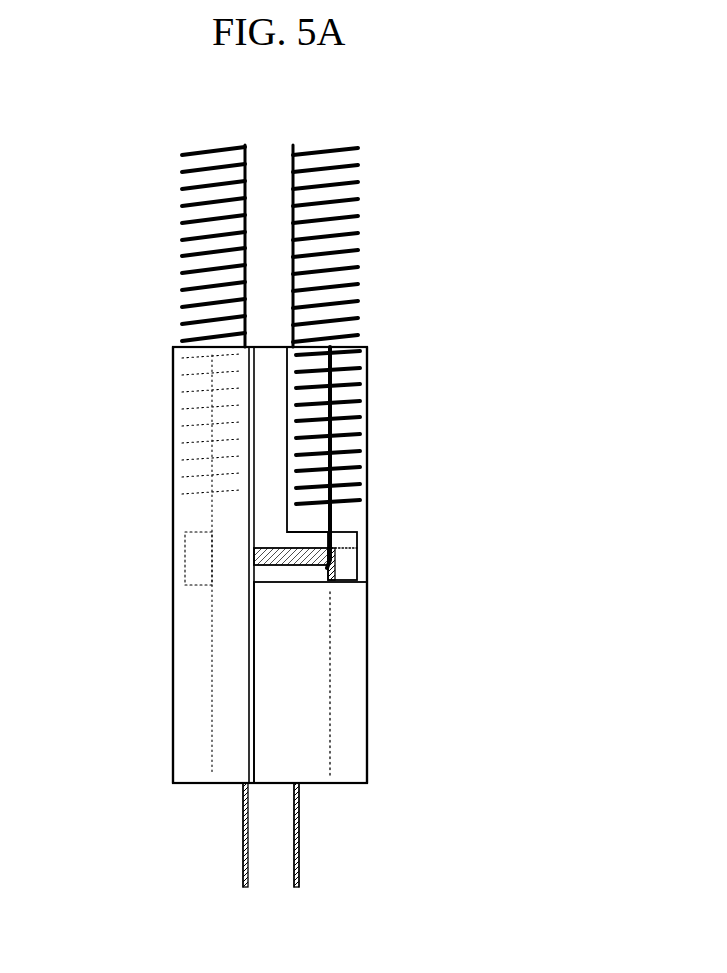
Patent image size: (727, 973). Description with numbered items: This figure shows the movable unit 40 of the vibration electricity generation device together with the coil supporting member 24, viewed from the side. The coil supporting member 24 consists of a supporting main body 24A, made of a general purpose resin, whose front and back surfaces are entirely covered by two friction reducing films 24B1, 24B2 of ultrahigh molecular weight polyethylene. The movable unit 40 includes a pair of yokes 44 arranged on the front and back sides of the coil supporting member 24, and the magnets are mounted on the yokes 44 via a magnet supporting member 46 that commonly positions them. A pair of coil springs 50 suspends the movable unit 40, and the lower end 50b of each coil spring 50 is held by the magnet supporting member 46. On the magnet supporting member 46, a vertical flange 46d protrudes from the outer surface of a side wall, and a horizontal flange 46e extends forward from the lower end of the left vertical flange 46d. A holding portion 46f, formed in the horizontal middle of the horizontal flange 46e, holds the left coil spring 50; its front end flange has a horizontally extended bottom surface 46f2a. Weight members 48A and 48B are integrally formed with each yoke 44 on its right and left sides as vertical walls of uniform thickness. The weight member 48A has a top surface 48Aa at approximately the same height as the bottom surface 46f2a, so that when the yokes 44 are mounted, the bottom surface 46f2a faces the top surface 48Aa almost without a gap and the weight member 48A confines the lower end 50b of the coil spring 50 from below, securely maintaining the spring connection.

The movable unit 40 is at (390, 375).
The yoke 44 is at (171, 708).
The magnet supporting member 46 is at (360, 417).
The vertical flange 46d is at (256, 425).
The horizontal flange 46e is at (300, 535).
The holding portion 46f is at (346, 546).
The bottom surface 46f2a is at (345, 583).
The weight member 48A is at (290, 735).
The top surface 48Aa is at (300, 578).
The weight member 48B is at (218, 635).
The coil spring 50 is at (180, 222).
The lower end 50b is at (335, 518).
The coil supporting member 24 is at (301, 832).
The supporting main body 24A is at (283, 812).
The friction reducing film 24B1 is at (300, 853).
The friction reducing film 24B2 is at (243, 853).